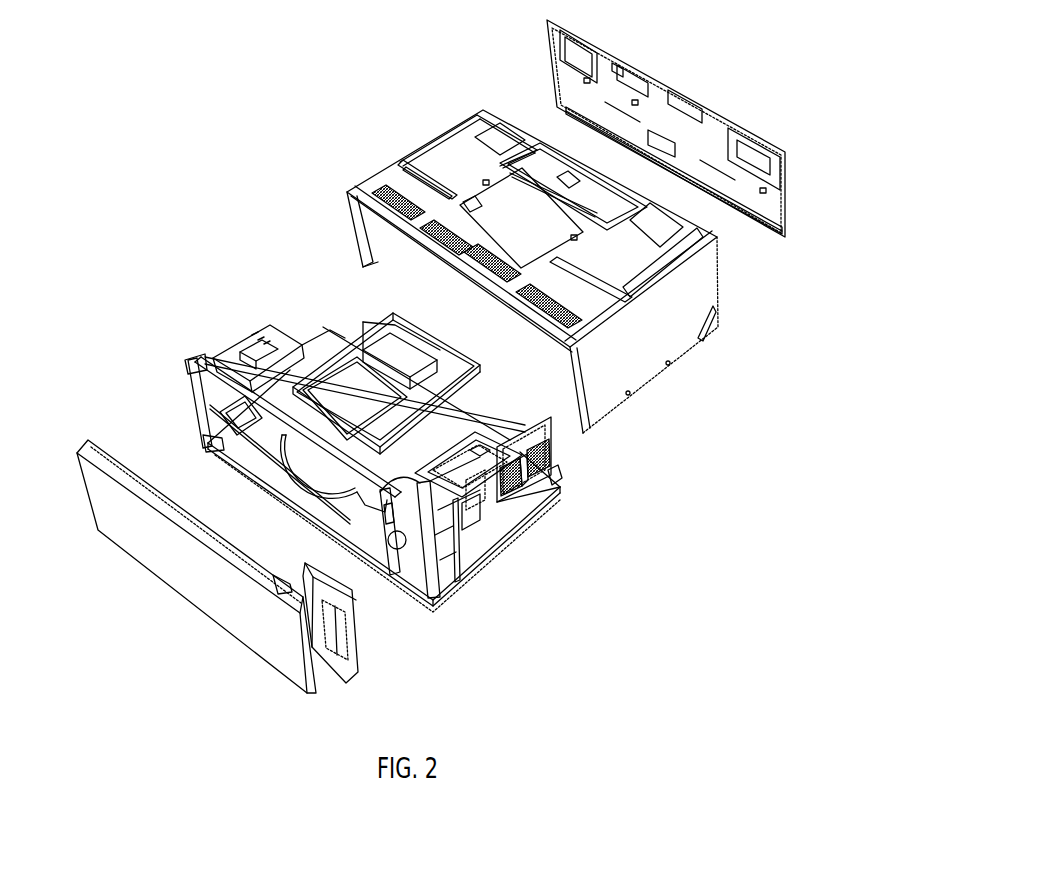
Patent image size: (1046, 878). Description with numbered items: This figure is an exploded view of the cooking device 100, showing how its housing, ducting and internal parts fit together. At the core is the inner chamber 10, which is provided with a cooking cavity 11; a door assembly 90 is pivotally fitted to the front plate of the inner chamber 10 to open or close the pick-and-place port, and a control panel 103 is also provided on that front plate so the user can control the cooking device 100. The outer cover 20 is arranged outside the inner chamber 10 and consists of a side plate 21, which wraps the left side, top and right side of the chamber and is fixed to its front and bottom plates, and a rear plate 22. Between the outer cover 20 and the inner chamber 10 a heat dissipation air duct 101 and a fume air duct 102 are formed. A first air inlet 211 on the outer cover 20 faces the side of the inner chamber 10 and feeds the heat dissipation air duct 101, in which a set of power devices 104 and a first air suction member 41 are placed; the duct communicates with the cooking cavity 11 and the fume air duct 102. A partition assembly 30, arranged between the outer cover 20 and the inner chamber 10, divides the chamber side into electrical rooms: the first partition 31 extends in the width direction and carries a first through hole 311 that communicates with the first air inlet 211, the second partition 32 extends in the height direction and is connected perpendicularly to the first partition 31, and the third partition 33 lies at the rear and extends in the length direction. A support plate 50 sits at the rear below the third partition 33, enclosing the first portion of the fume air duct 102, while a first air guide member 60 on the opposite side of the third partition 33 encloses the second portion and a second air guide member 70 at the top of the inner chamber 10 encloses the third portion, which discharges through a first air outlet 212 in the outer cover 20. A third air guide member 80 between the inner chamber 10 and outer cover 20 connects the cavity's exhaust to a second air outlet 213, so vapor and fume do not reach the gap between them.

The cooking device 100 is at (405, 34).
The inner chamber 10 is at (300, 333).
The cooking cavity 11 is at (262, 432).
The outer cover 20 is at (851, 260).
The side plate 21 is at (718, 250).
The rear plate 22 is at (764, 230).
The first air inlet 211 is at (578, 320).
The first air outlet 212 is at (485, 272).
The second air outlet 213 is at (380, 193).
The partition assembly 30 is at (627, 508).
The first partition 31 is at (503, 543).
The second partition 32 is at (543, 513).
The third partition 33 is at (553, 503).
The first through hole 311 is at (357, 514).
The first air suction member 41 is at (473, 547).
The support plate 50 is at (562, 490).
The first air guide member 60 is at (408, 420).
The second air guide member 70 is at (392, 314).
The third air guide member 80 is at (250, 346).
The door assembly 90 is at (108, 515).
The heat dissipation air duct 101 is at (400, 577).
The fume air duct 102 is at (555, 472).
The control panel 103 is at (365, 646).
The set of power devices 104 is at (483, 528).